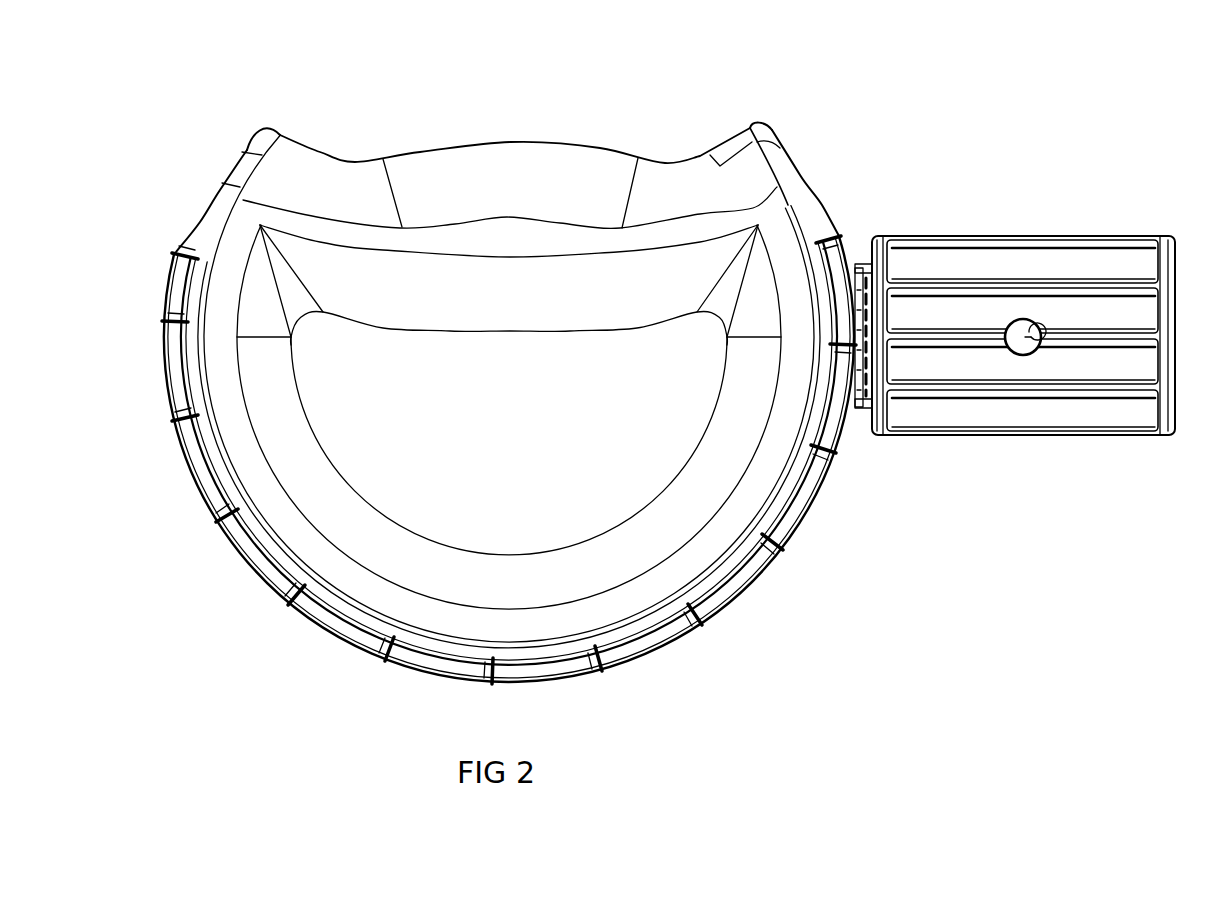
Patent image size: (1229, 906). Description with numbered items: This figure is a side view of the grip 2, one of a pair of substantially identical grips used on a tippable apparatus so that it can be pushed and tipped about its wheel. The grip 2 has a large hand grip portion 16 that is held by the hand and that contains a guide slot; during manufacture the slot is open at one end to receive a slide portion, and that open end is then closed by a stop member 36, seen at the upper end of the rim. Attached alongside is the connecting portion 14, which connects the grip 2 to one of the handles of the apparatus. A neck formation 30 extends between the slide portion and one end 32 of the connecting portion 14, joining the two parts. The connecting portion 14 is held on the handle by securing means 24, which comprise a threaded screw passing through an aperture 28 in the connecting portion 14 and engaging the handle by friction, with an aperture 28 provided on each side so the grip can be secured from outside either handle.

The grip 2 is at (236, 112).
The hand grip portion 16 is at (473, 146).
The stop member 36 is at (762, 128).
The end of the connecting portion 32 is at (883, 236).
The neck formation 30 is at (858, 408).
The connecting portion 14 is at (1015, 216).
The securing means 24 is at (1015, 452).
The aperture 28 is at (1040, 330).